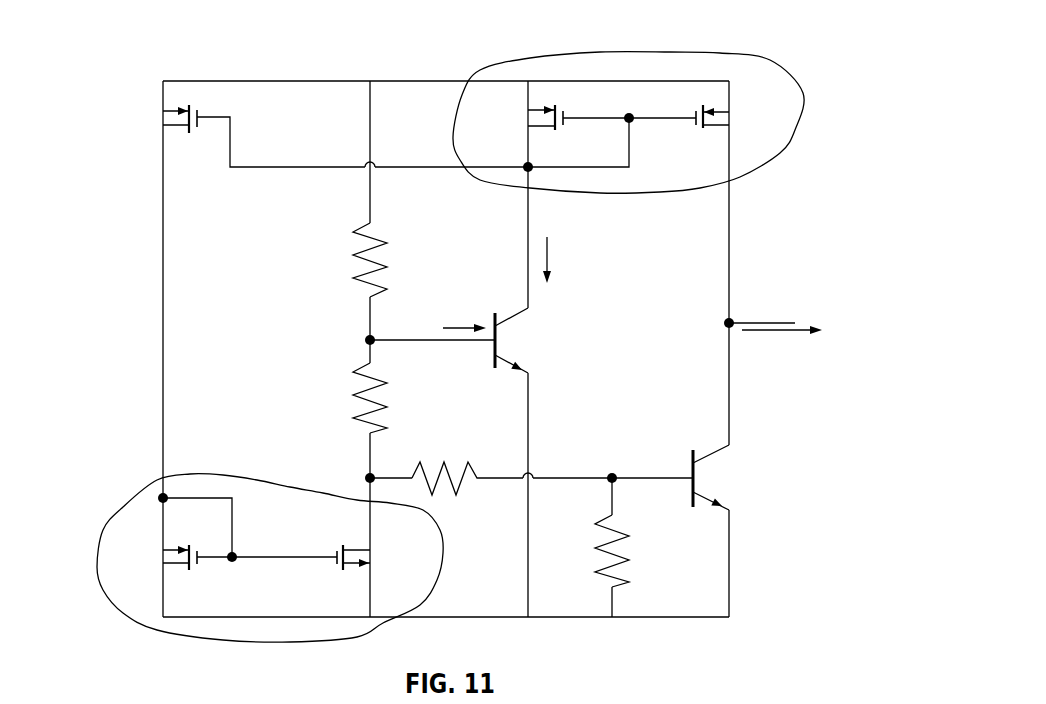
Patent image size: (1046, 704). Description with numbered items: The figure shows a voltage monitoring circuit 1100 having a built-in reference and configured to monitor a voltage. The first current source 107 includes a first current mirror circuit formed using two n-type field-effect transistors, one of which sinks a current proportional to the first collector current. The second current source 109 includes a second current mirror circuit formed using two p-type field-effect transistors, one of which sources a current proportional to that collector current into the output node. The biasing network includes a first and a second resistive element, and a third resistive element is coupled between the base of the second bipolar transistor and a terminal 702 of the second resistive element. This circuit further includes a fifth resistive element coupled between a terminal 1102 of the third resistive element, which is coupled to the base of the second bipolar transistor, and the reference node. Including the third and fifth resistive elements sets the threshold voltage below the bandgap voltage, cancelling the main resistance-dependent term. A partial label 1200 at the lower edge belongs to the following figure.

The voltage monitoring circuit 1100 is at (220, 33).
The second current source 109 is at (715, 50).
The first current source 107 is at (212, 474).
The terminal of the second resistive element 702 is at (365, 475).
The terminal of the resistive element R3 1102 is at (529, 472).
The circuit (next figure) 1200 is at (88, 703).